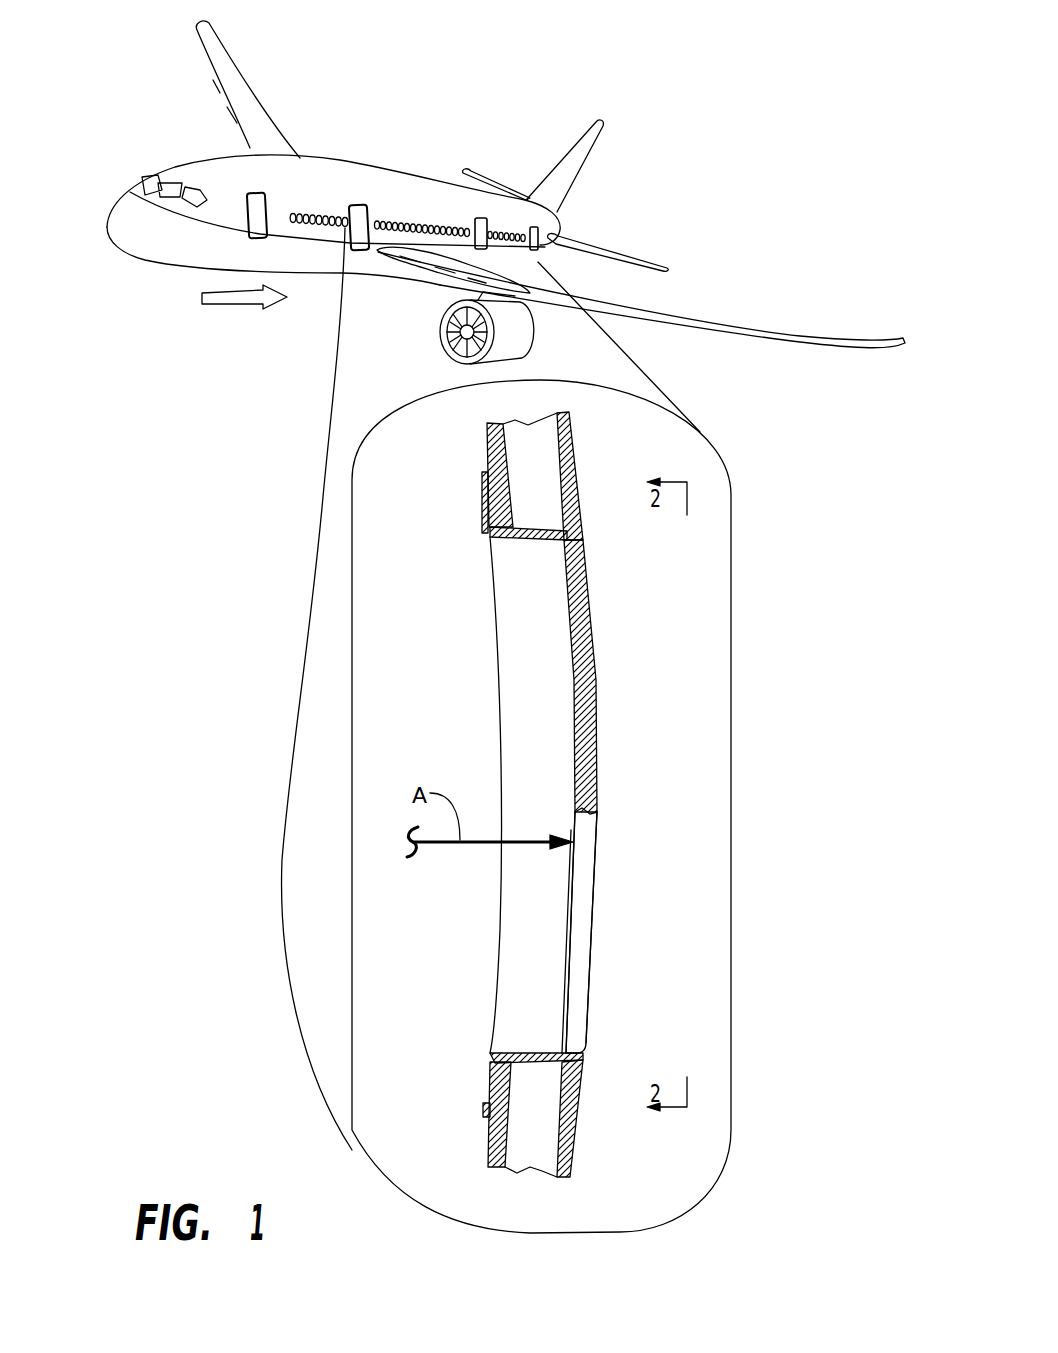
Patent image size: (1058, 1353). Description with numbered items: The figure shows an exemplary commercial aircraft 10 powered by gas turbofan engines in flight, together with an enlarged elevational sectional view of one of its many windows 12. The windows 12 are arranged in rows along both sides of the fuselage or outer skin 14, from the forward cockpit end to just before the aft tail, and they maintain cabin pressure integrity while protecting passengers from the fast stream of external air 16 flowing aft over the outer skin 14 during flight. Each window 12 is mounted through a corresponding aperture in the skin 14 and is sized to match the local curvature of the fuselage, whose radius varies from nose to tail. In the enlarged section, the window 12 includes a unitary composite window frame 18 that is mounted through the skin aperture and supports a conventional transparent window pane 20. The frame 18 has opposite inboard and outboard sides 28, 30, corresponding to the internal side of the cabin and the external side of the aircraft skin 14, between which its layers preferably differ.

The aircraft 10 is at (345, 164).
The window 12 is at (592, 995).
The outer skin 14 is at (448, 213).
The external air 16 is at (233, 305).
The composite window frame 18 is at (562, 1023).
The window pane 20 is at (597, 655).
The inboard side 28 is at (572, 927).
The outboard side 30 is at (597, 930).